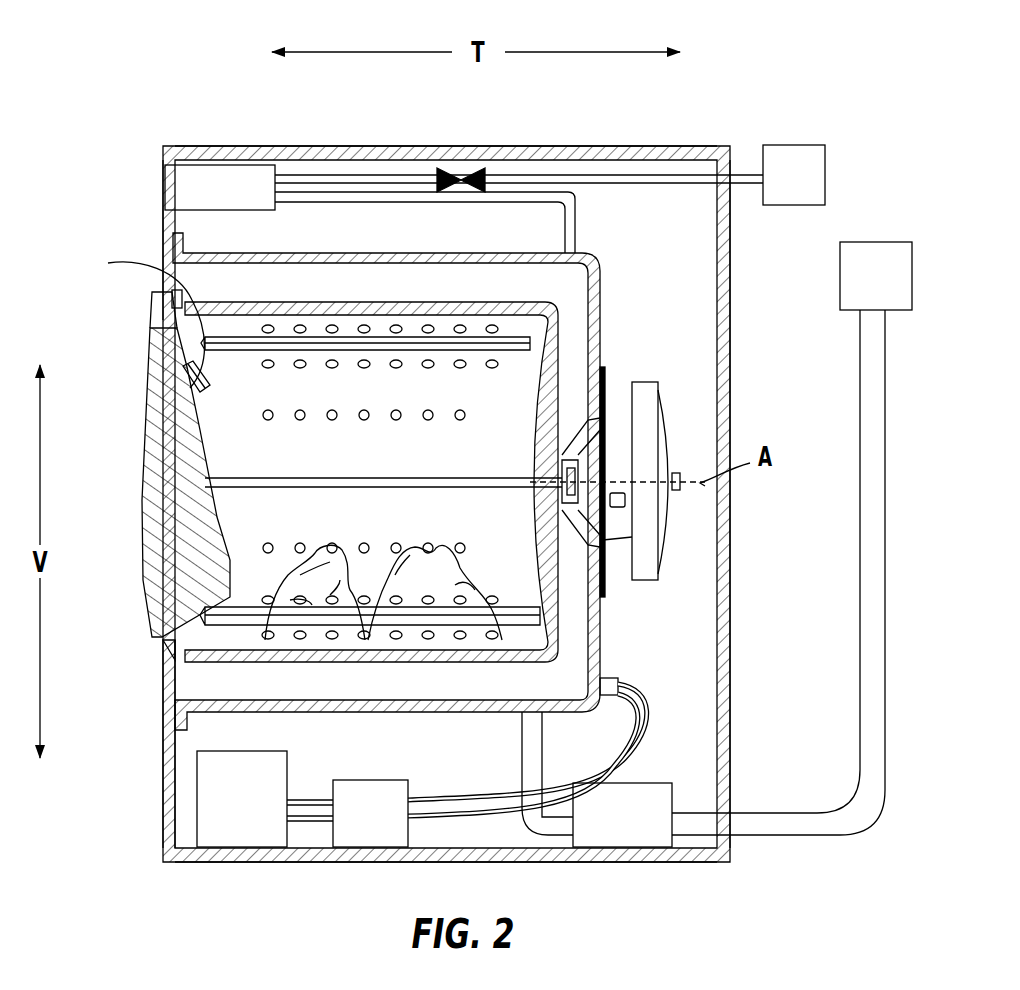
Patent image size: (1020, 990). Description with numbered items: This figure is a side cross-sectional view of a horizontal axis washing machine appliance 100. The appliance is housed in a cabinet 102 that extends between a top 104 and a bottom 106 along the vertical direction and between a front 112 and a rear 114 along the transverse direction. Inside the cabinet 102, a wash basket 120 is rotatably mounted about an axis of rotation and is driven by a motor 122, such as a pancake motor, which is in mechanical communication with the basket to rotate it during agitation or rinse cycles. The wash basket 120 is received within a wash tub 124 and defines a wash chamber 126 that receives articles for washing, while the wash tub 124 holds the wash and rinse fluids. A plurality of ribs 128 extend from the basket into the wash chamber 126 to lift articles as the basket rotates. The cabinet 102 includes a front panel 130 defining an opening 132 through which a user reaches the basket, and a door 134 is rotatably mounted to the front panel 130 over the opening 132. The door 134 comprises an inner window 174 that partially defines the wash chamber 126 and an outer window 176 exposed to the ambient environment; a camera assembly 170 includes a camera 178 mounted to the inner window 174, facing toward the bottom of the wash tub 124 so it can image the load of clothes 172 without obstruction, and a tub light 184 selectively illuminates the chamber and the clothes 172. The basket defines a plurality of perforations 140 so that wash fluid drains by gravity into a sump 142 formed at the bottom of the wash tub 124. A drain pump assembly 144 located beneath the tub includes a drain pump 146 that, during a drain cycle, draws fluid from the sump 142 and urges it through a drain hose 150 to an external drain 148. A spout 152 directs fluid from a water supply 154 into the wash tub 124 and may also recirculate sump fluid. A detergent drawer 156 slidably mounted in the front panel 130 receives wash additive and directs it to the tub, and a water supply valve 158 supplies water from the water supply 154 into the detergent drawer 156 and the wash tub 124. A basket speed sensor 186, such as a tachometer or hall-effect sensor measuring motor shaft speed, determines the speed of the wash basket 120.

The washing machine appliance 100 is at (453, 440).
The cabinet 102 is at (732, 488).
The top 104 is at (747, 148).
The bottom 106 is at (765, 854).
The front 112 is at (153, 148).
The rear 114 is at (737, 303).
The wash basket 120 is at (371, 464).
The motor 122 is at (645, 425).
The wash tub 124 is at (600, 328).
The wash chamber 126 is at (228, 436).
The ribs 128 is at (314, 478).
The front panel 130 is at (165, 683).
The opening 132 is at (185, 336).
The door 134 is at (145, 435).
The perforations 140 is at (430, 421).
The sump 142 is at (570, 668).
The drain pump assembly 144 is at (695, 736).
The drain pump 146 is at (600, 832).
The external drain 148 is at (860, 290).
The drain hose 150 is at (866, 625).
The spout 152 is at (579, 232).
The water supply 154 is at (780, 190).
The detergent drawer 156 is at (235, 187).
The water supply valve 158 is at (462, 176).
The camera assembly 170 is at (172, 378).
The load of clothes 172 is at (388, 620).
The inner window 174 is at (225, 533).
The outer window 176 is at (143, 565).
The camera 178 is at (80, 250).
The tub light 184 is at (176, 300).
The basket speed sensor 186 is at (618, 507).